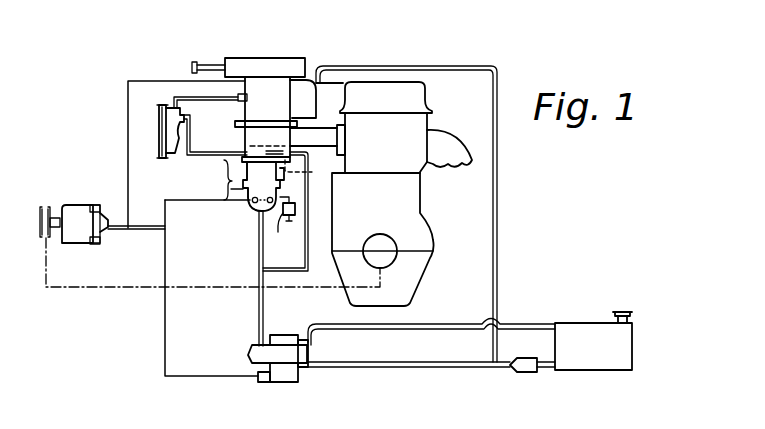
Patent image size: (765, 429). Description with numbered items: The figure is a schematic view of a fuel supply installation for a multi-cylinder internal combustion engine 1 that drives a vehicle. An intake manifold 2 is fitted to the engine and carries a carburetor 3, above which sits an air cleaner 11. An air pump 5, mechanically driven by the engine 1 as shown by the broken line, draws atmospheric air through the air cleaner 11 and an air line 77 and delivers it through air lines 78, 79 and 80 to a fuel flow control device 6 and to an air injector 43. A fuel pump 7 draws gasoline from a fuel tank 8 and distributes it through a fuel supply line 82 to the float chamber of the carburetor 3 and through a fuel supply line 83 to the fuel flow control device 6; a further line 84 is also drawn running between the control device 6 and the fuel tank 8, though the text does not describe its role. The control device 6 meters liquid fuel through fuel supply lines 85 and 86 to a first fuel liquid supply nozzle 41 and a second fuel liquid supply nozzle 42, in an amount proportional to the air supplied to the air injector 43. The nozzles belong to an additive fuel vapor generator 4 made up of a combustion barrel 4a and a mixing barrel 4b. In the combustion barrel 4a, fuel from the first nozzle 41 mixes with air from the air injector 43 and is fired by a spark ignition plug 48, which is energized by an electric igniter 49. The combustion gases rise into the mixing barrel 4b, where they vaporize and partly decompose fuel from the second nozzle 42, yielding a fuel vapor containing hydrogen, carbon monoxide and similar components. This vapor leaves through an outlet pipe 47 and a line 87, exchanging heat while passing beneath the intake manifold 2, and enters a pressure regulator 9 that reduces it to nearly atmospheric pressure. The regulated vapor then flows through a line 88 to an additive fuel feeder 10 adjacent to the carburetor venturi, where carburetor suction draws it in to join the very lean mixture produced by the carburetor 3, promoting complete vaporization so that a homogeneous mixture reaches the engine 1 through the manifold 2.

The internal combustion engine 1 is at (413, 192).
The intake manifold 2 is at (317, 137).
The carburetor 3 is at (294, 102).
The additive fuel vapor generator 4 is at (234, 184).
The combustion barrel 4a is at (180, 189).
The mixing barrel 4b is at (222, 168).
The air pump 5 is at (75, 203).
The fuel flow control device 6 is at (285, 383).
The fuel pump 7 is at (522, 373).
The fuel tank 8 is at (598, 371).
The pressure regulator 9 is at (160, 150).
The additive fuel feeder 10 is at (268, 95).
The air cleaner 11 is at (260, 58).
The first fuel liquid supply nozzle 41 is at (258, 213).
The second fuel liquid supply nozzle 42 is at (315, 171).
The air injector 43 is at (247, 204).
The outlet pipe 47 is at (247, 148).
The spark ignition plug 48 is at (297, 201).
The electric igniter 49 is at (278, 233).
The air line 77 is at (128, 100).
The air line 78 is at (135, 231).
The air line 79 is at (165, 332).
The air line 80 is at (178, 201).
The fuel supply line 82 is at (498, 259).
The fuel supply line 83 is at (428, 368).
The fuel return line 84 is at (455, 324).
The fuel supply line 85 is at (258, 323).
The fuel supply line 86 is at (305, 270).
The line 87 is at (182, 157).
The line 88 is at (190, 93).